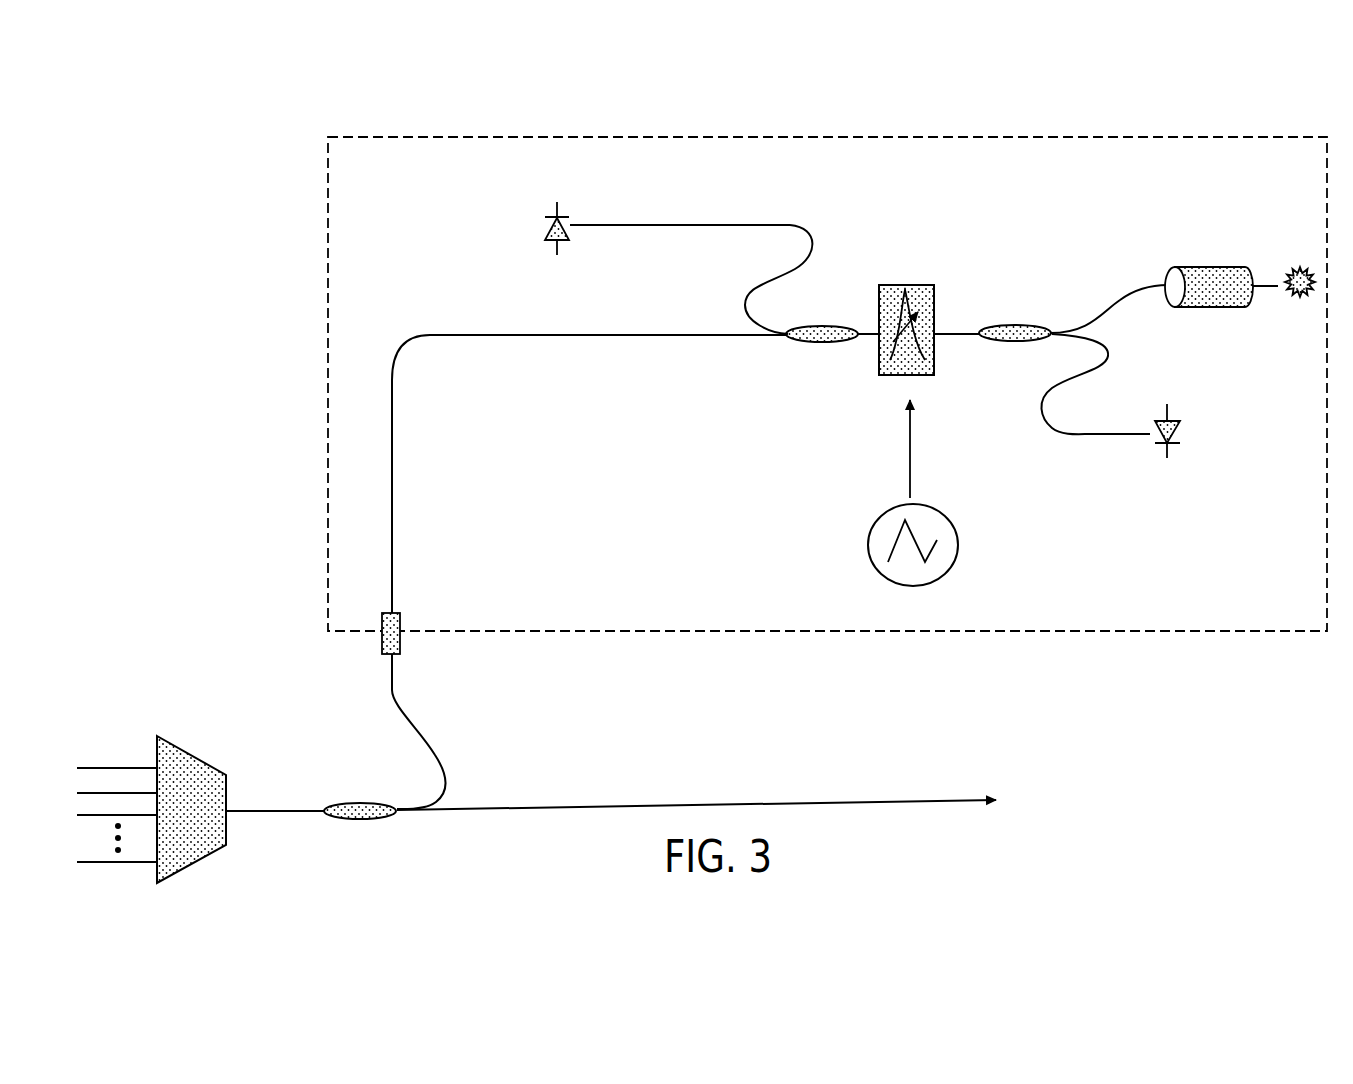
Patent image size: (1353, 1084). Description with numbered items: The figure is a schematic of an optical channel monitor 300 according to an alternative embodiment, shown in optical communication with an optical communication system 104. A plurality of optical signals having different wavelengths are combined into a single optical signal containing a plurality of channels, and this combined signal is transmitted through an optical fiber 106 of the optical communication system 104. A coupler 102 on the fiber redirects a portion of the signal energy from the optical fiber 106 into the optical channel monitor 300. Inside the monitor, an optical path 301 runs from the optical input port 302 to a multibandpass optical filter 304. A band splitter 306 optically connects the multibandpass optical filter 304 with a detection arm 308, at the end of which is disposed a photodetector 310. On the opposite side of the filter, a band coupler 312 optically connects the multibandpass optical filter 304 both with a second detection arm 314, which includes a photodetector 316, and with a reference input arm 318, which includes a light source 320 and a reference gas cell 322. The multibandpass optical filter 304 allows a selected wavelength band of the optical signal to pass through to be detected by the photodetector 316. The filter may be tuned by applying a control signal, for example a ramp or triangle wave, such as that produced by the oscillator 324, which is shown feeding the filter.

The optical channel monitor 300 is at (312, 352).
The optical path 301 is at (392, 438).
The optical input port 302 is at (400, 621).
The multibandpass optical filter 304 is at (906, 285).
The band splitter 306 is at (822, 343).
The detection arm 308 is at (627, 269).
The photodetector 310 is at (545, 228).
The band coupler 312 is at (1013, 342).
The detection arm 314 is at (1085, 436).
The photodetector 316 is at (1187, 431).
The reference input arm 318 is at (1113, 297).
The light source 320 is at (1299, 298).
The reference gas cell 322 is at (1213, 266).
The oscillator 324 is at (958, 545).
The coupler 102 is at (361, 802).
The optical communication system 104 is at (708, 772).
The optical fiber 106 is at (647, 804).